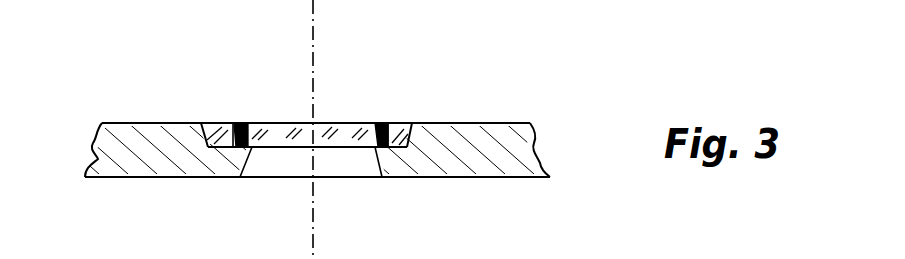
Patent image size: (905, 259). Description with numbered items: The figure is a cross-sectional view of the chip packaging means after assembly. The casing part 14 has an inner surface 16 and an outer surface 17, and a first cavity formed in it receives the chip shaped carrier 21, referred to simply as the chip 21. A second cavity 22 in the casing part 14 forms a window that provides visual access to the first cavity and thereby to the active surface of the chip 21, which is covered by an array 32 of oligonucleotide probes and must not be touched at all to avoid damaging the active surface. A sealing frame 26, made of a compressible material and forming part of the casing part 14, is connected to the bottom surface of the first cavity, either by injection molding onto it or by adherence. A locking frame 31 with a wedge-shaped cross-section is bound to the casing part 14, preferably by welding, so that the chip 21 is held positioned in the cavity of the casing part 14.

The casing part 14 is at (90, 144).
The inner surface 16 is at (490, 121).
The outer surface 17 is at (487, 177).
The chip shaped carrier 21 is at (342, 121).
The second cavity 22 is at (267, 168).
The sealing frame 26 is at (243, 125).
The locking frame 31 is at (398, 121).
The array of oligonucleotide probes 32 is at (278, 123).